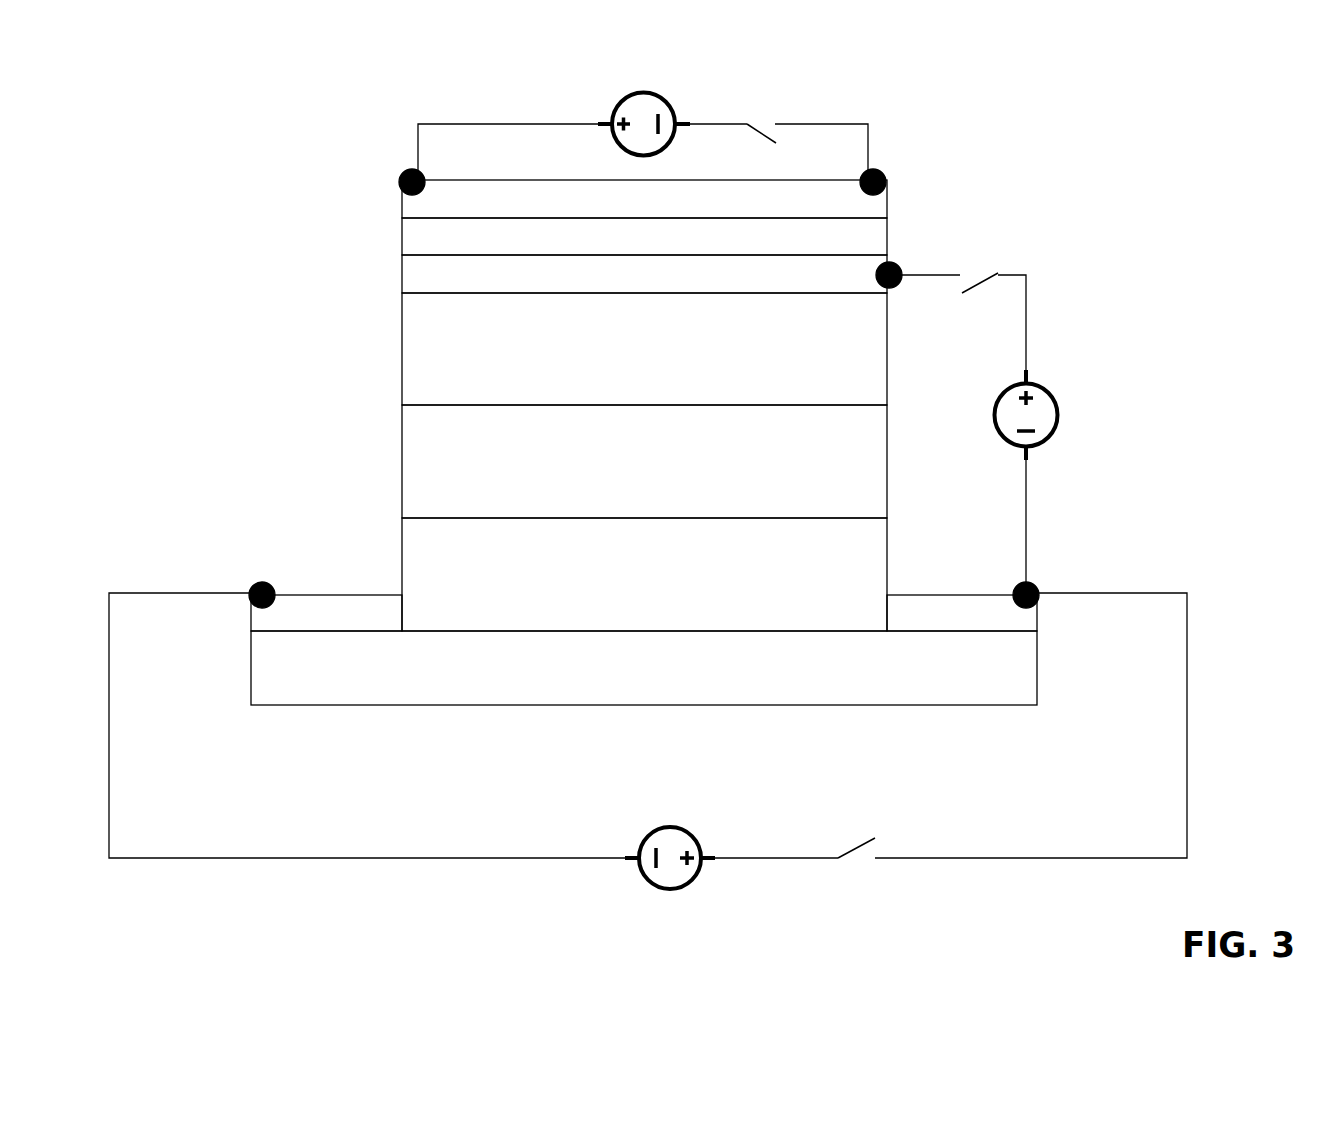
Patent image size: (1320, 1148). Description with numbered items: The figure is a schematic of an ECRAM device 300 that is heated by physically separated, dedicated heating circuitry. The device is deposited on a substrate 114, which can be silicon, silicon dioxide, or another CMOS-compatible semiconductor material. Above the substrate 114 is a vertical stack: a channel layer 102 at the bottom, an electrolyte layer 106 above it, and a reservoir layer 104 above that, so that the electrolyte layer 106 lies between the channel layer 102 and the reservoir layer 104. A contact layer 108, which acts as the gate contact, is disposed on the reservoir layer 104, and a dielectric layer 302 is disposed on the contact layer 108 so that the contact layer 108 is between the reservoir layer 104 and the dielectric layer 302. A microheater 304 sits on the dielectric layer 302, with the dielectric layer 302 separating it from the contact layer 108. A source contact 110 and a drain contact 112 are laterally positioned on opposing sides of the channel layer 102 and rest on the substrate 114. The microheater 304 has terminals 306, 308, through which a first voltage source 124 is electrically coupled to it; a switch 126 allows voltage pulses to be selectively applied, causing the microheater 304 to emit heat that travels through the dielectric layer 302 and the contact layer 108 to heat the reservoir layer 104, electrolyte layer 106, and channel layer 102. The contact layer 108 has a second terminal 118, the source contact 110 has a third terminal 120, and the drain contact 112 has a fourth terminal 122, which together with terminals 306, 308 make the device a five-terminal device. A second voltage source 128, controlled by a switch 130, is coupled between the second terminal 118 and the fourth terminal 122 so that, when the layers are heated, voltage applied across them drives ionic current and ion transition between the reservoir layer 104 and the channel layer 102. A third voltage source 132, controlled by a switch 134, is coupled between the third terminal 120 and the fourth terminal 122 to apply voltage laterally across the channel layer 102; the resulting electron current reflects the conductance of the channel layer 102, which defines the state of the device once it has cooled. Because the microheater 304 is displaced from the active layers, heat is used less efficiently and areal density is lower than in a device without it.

The ECRAM device 300 is at (1101, 171).
The microheater 304 is at (839, 212).
The dielectric layer 302 is at (829, 247).
The contact layer 108 is at (809, 284).
The reservoir layer 104 is at (837, 391).
The electrolyte layer 106 is at (837, 503).
The channel layer 102 is at (837, 616).
The substrate 114 is at (1017, 692).
The source contact 110 is at (360, 593).
The drain contact 112 is at (907, 593).
The third terminal 120 is at (250, 608).
The fourth terminal 122 is at (1038, 583).
The microheater terminal 306 is at (408, 170).
The microheater terminal 308 is at (880, 172).
The second terminal 118 is at (892, 262).
The first voltage source 124 is at (648, 93).
The switch 126 is at (745, 96).
The second voltage source 128 is at (1048, 390).
The switch 130 is at (975, 266).
The third voltage source 132 is at (684, 831).
The switch 134 is at (855, 867).